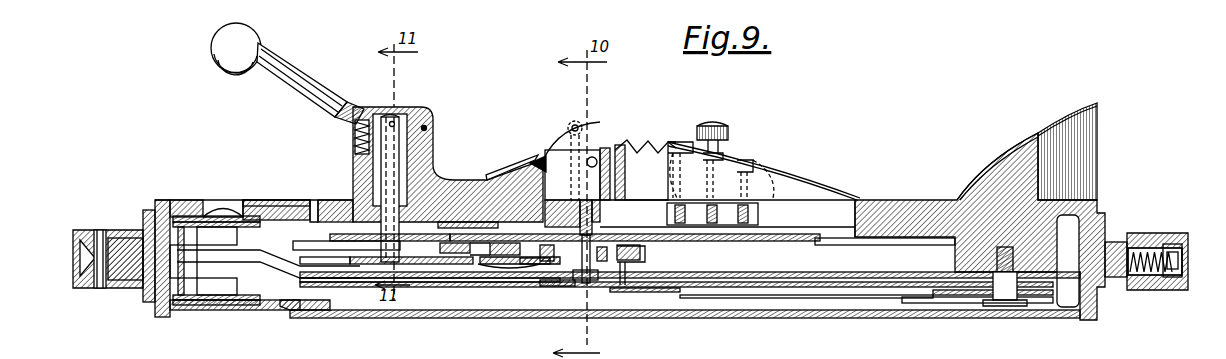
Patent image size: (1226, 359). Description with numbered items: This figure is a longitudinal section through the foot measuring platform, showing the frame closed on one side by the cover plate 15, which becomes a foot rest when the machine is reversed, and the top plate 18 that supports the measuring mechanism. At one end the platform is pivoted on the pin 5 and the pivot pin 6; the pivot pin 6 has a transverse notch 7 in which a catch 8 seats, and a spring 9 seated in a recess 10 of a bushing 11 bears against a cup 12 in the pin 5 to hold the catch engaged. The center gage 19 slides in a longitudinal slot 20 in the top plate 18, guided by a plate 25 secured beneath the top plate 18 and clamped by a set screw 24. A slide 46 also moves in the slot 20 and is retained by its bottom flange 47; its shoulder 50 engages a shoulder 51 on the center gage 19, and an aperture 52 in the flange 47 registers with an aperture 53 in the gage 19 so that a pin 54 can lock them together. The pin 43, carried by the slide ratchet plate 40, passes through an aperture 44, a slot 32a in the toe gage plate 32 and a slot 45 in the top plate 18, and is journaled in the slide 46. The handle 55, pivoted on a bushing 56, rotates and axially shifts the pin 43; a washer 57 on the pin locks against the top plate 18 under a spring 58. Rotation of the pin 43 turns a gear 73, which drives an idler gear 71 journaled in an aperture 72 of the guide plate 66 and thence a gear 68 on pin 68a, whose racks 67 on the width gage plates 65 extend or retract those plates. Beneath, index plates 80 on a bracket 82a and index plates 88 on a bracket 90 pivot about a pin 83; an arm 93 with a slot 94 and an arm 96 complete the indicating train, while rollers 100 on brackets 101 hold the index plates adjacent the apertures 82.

The pin 5 is at (1112, 242).
The pivot pin 6 is at (118, 288).
The transverse notch 7 is at (82, 288).
The catch 8 is at (103, 232).
The spring 9 is at (1148, 282).
The recess 10 is at (1170, 278).
The bushing 11 is at (1172, 243).
The cup 12 is at (1138, 245).
The cover plate 15 is at (856, 318).
The top plate 18 is at (913, 200).
The center gage 19 is at (810, 188).
The longitudinal slot 20 is at (856, 196).
The set screw 24 is at (728, 131).
The plate 25 is at (760, 211).
The toe gage plate 32 is at (722, 262).
The slot 32a is at (425, 246).
The slide ratchet plate 40 is at (808, 244).
The pin 43 is at (353, 193).
The aperture 44 is at (310, 302).
The slot 45 is at (333, 200).
The slide 46 is at (480, 200).
The bottom flange 47 is at (470, 212).
The shoulder 50 is at (572, 160).
The shoulder 51 is at (627, 146).
The aperture 52 is at (565, 208).
The aperture 53 is at (628, 168).
The pin 54 is at (573, 120).
The handle 55 is at (284, 82).
The bushing 56 is at (432, 152).
The washer 57 is at (352, 237).
The spring 58 is at (355, 137).
The width gage plates 65 is at (632, 243).
The guide plate 66 is at (643, 255).
The racks 67 is at (560, 270).
The gear 68 is at (597, 241).
The pin 68a is at (575, 265).
The idler gear 71 is at (505, 268).
The aperture 72 is at (495, 252).
The gear 73 is at (358, 267).
The index plates 80 is at (215, 222).
The apertures 82 is at (200, 208).
The bracket 82a is at (352, 250).
The pin 83 is at (1003, 306).
The index plates 88 is at (240, 225).
The bracket 90 is at (945, 300).
The arm 93 is at (705, 292).
The slot 94 is at (530, 258).
The arm 96 is at (792, 290).
The rollers 100 is at (225, 283).
The brackets 101 is at (145, 297).